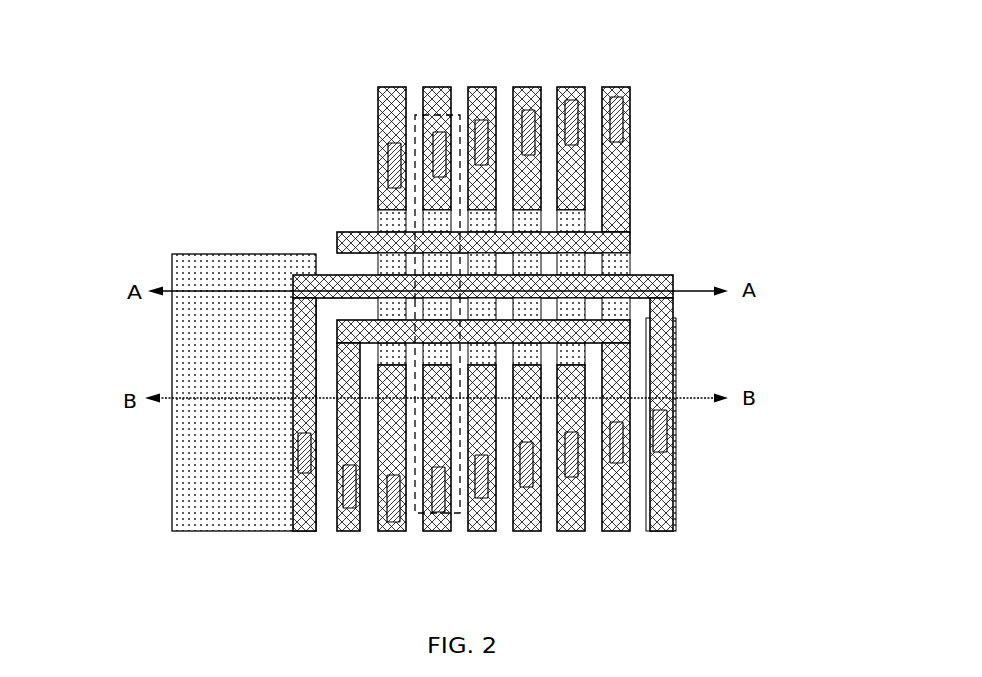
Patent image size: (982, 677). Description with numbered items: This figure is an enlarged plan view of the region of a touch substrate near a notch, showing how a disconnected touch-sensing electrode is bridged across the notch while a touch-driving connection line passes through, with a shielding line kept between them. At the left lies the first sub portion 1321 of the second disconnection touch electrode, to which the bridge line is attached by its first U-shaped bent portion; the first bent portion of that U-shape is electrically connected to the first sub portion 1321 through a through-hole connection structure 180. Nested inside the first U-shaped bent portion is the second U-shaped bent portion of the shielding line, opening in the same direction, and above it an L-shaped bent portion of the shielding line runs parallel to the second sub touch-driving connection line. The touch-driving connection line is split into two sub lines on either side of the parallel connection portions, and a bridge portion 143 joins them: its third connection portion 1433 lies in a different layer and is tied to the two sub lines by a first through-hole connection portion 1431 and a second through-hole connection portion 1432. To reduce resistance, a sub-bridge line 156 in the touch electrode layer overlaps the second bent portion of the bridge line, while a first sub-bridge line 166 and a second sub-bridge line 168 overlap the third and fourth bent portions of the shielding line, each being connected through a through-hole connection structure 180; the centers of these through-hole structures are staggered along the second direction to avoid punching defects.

The first sub portion 1321 is at (267, 443).
The bridge portion 143 is at (378, 180).
The second through-hole connection portion 1432 is at (418, 118).
The first through-hole connection portion 1431 is at (448, 518).
The third connection portion 1433 is at (542, 518).
The first sub-bridge line 166 is at (337, 487).
The second sub-bridge line 168 is at (630, 500).
The sub-bridge line 156 is at (672, 463).
The through-hole connection structure 180 is at (673, 432).